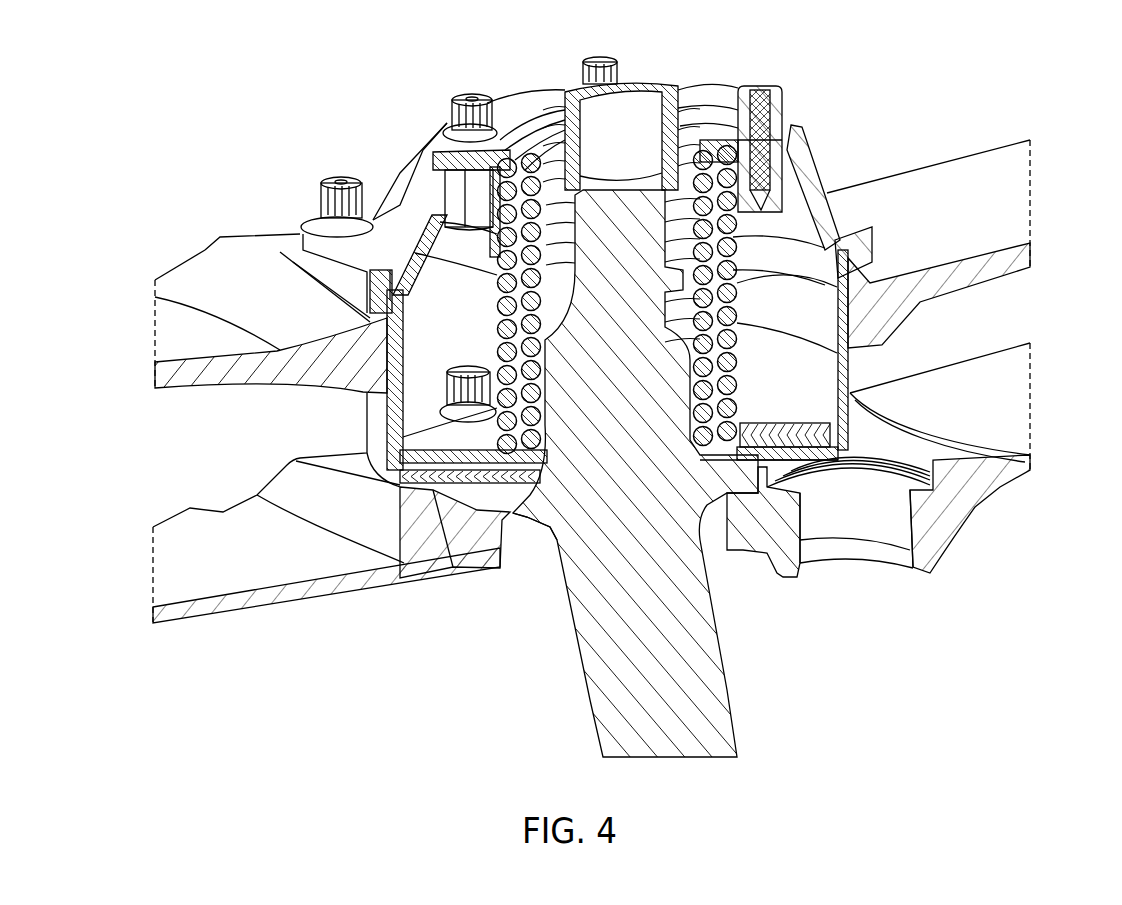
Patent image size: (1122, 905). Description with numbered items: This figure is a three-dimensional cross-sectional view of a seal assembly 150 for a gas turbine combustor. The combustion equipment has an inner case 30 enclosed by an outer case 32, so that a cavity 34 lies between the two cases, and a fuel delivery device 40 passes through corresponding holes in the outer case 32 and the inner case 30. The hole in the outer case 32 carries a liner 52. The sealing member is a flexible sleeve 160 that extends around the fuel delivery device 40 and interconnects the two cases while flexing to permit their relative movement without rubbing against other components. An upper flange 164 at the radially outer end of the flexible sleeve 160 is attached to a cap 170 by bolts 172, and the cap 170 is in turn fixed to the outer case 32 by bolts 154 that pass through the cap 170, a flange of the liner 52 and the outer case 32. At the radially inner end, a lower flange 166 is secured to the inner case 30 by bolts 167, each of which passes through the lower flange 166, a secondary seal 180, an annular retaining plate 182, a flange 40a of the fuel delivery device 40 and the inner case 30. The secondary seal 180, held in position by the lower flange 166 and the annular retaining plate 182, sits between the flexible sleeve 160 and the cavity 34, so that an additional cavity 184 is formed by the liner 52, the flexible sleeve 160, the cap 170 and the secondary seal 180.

The seal assembly 150 is at (263, 114).
The bolts 172 is at (442, 103).
The bolts 154 is at (317, 222).
The cap 170 is at (300, 247).
The upper flange 164 is at (790, 185).
The liner 52 is at (385, 358).
The additional cavity 184 is at (468, 319).
The outer case 32 is at (173, 375).
The cavity 34 is at (217, 475).
The flexible sleeve 160 is at (738, 341).
The bolts 167 is at (546, 404).
The lower flange 166 is at (843, 424).
The secondary seal 180 is at (420, 466).
The annular retaining plate 182 is at (428, 482).
The flange of the fuel delivery device 40a is at (513, 521).
The fuel delivery device 40 is at (697, 667).
The inner case 30 is at (190, 610).